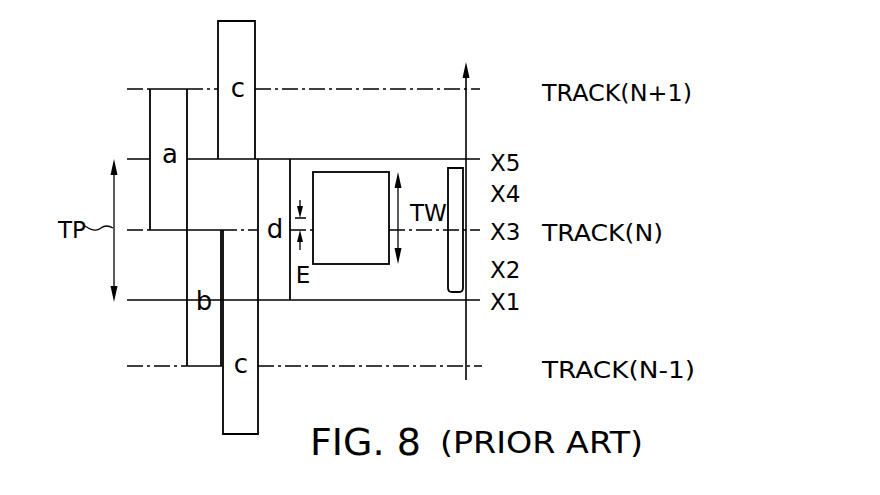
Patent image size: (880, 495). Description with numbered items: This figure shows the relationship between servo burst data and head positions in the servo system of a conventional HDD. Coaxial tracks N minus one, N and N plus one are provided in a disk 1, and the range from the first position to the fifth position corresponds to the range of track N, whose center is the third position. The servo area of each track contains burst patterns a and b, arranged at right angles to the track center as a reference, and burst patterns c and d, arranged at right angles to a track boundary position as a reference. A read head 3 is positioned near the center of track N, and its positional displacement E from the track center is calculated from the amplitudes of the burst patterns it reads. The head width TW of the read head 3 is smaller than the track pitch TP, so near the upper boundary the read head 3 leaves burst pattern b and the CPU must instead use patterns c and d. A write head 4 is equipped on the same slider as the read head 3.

The disk 1 is at (117, 316).
The read head 3 is at (379, 172).
The write head 4 is at (460, 282).